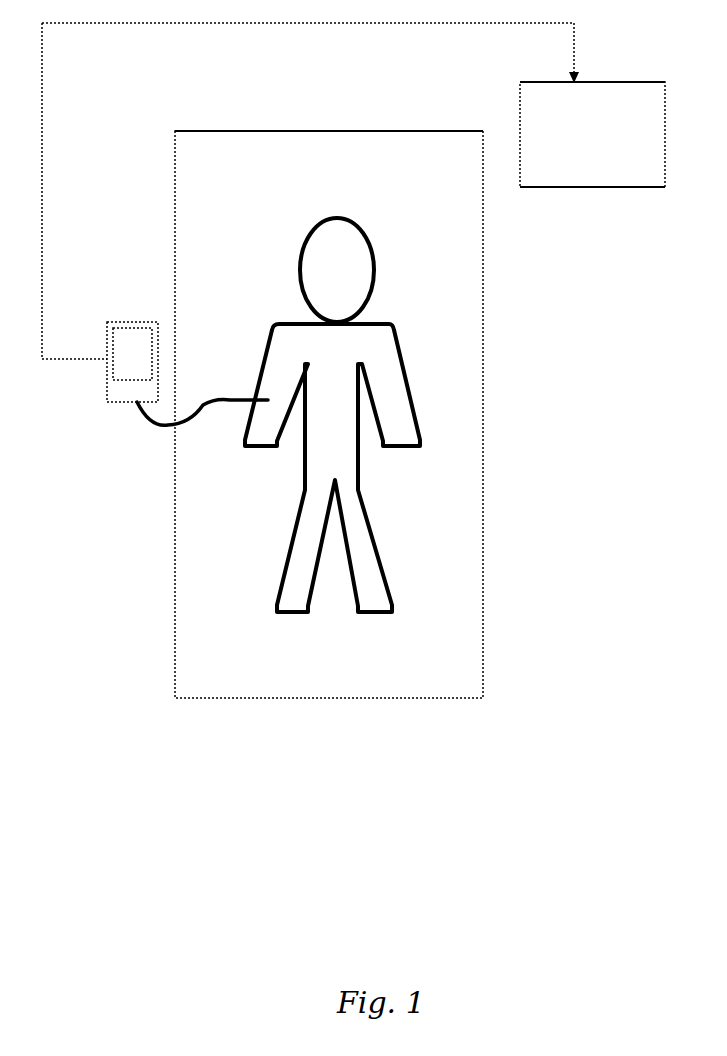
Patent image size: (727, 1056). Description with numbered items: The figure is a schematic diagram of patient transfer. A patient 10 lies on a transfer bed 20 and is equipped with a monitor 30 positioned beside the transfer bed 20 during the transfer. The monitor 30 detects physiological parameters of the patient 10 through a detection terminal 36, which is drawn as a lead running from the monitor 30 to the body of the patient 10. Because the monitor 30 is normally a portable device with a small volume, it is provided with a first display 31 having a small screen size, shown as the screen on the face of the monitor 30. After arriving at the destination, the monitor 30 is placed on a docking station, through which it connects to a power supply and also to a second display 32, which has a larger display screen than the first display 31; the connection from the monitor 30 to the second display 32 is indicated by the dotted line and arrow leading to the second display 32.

The patient 10 is at (335, 217).
The transfer bed 20 is at (216, 130).
The monitor 30 is at (118, 403).
The first display 31 is at (137, 322).
The second display 32 is at (590, 82).
The detection terminal 36 is at (172, 425).